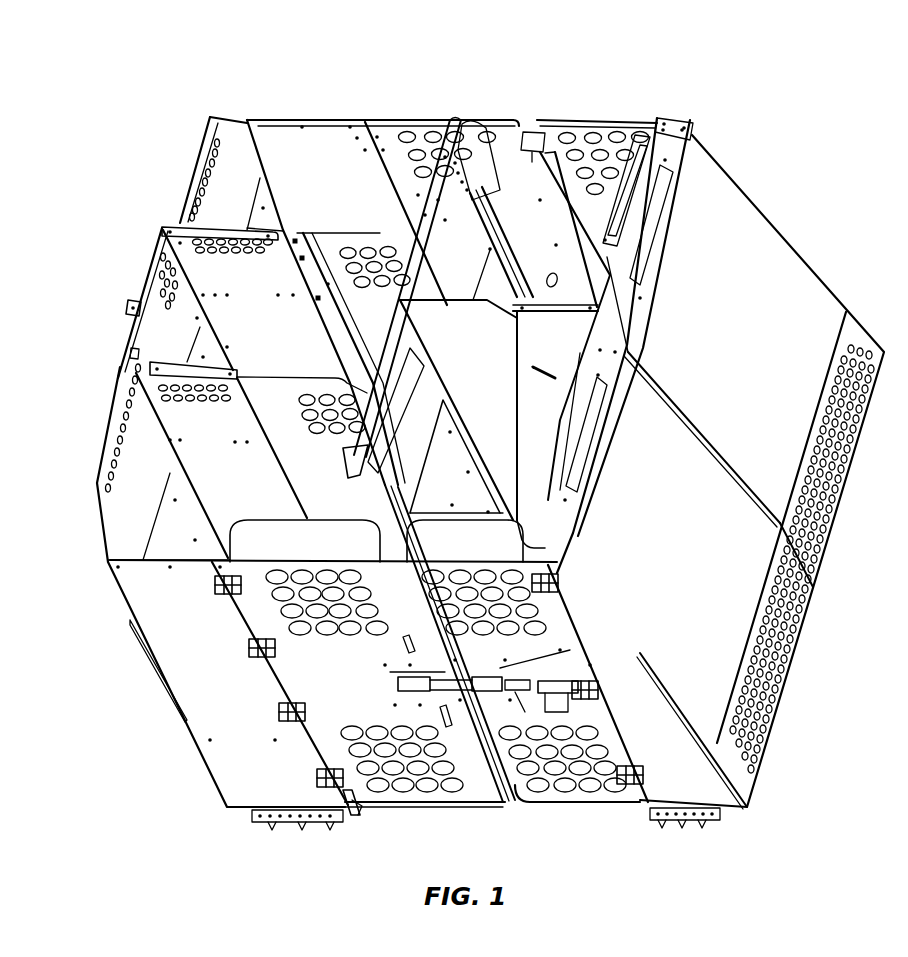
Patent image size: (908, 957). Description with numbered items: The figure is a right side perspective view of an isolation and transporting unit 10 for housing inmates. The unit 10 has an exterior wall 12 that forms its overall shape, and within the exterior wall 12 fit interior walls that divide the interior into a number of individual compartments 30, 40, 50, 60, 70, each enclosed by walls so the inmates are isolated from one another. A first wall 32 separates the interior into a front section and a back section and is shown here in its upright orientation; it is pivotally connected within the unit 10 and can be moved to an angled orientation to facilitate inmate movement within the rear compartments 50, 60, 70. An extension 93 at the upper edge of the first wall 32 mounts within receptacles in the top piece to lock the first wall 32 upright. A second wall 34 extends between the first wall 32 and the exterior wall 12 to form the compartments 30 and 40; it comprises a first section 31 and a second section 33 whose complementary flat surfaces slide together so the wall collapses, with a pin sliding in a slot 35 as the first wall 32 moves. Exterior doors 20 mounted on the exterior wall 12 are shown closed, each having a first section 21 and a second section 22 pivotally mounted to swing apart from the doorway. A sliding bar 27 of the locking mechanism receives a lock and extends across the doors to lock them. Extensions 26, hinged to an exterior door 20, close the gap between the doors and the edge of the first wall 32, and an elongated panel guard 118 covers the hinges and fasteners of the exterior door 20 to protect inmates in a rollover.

The isolation and transporting unit 10 is at (103, 694).
The exterior wall 12 is at (128, 307).
The exterior door 20 is at (478, 792).
The first section 21 is at (356, 805).
The second section 22 is at (603, 793).
The extension 26 is at (540, 229).
The sliding bar 27 is at (480, 680).
The compartment 30 is at (190, 271).
The first section 31 is at (442, 410).
The first wall 32 is at (425, 210).
The second section 33 is at (561, 411).
The second wall 34 is at (548, 350).
The slot 35 is at (533, 376).
The compartment 40 is at (560, 427).
The compartment 50 is at (210, 490).
The compartment 60 is at (246, 341).
The compartment 70 is at (275, 147).
The extension 93 is at (343, 448).
The guard (elongated panel) 118 is at (330, 280).